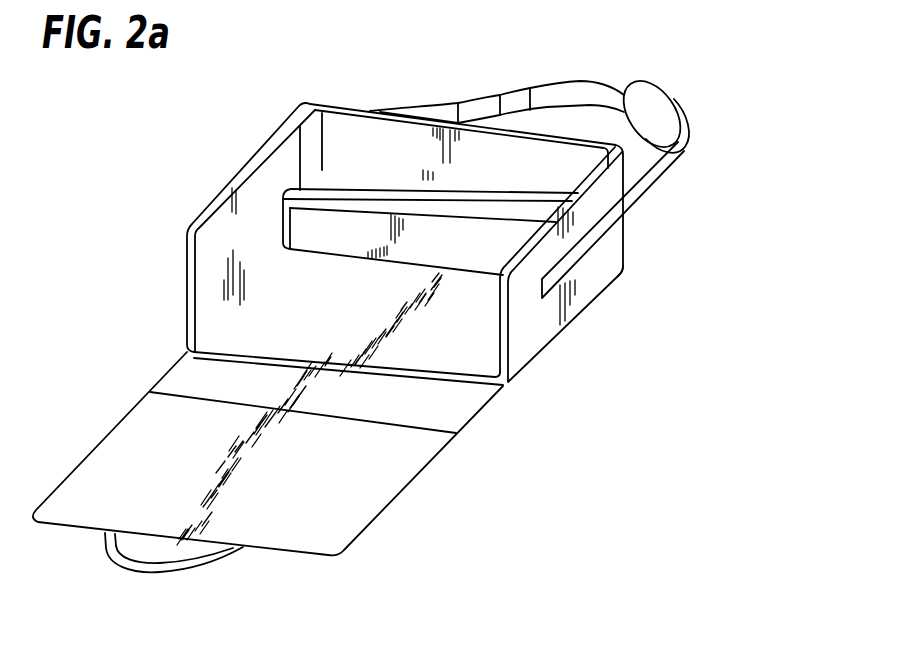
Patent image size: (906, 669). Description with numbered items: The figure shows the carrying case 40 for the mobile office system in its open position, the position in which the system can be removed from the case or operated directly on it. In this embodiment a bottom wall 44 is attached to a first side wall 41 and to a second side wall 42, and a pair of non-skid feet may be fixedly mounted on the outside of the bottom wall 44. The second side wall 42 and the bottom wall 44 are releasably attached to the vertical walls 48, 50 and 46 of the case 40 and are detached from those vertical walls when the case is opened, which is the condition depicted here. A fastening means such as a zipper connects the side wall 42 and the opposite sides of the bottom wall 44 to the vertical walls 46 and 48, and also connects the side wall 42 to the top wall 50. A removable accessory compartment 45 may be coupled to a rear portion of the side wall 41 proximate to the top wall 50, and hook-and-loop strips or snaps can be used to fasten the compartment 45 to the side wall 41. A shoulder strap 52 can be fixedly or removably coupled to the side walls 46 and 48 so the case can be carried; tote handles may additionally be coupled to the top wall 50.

The carrying case 40 is at (408, 40).
The first side wall 41 is at (449, 342).
The second side wall 42 is at (87, 450).
The bottom wall 44 is at (168, 376).
The removable accessory compartment 45 is at (463, 237).
The vertical wall 46 is at (230, 180).
The vertical wall 48 is at (600, 292).
The top wall 50 is at (558, 133).
The shoulder strap 52 is at (682, 138).